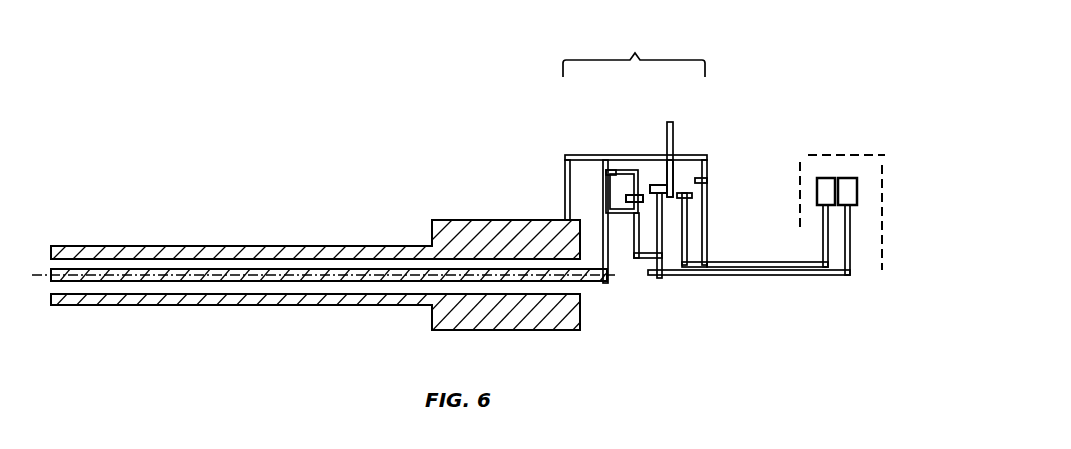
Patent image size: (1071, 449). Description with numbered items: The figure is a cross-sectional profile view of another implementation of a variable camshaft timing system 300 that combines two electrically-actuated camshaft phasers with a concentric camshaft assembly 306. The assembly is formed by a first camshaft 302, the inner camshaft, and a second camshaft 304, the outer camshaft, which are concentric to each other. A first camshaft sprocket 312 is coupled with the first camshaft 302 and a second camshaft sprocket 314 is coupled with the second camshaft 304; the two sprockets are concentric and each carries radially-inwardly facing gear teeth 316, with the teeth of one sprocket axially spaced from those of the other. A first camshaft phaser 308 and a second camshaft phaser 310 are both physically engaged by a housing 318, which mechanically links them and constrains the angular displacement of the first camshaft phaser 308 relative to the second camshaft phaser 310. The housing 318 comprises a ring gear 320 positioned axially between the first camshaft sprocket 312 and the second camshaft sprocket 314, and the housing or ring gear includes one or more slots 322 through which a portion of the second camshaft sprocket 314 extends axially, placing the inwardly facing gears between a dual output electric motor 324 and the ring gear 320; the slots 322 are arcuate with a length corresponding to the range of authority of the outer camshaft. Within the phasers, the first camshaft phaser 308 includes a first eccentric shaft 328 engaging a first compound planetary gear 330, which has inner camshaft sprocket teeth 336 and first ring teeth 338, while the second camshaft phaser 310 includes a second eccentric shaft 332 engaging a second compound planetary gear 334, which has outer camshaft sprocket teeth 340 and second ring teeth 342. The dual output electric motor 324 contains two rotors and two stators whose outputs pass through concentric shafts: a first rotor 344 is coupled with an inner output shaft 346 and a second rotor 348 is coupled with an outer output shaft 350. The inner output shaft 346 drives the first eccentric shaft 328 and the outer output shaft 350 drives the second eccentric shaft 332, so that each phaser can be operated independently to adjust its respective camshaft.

The variable camshaft timing system 300 is at (829, 62).
The first camshaft 302 is at (50, 274).
The second camshaft 304 is at (138, 246).
The concentric camshaft assembly 306 is at (64, 307).
The first camshaft phaser 308 is at (622, 262).
The second camshaft phaser 310 is at (708, 195).
The first camshaft sprocket 312 is at (651, 185).
The second camshaft sprocket 314 is at (690, 193).
The radially-inwardly facing gear teeth 316 is at (614, 171).
The housing 318 is at (634, 50).
The ring gear 320 is at (692, 152).
The slots 322 is at (678, 155).
The dual output electric motor 324 is at (895, 200).
The first eccentric shaft 328 is at (643, 272).
The first compound planetary gear 330 is at (630, 238).
The second eccentric shaft 332 is at (706, 262).
The second compound planetary gear 334 is at (705, 252).
The inner camshaft sprocket teeth 336 is at (622, 204).
The first ring teeth 338 is at (628, 226).
The outer camshaft sprocket teeth 340 is at (690, 195).
The second ring teeth 342 is at (677, 268).
The first rotor 344 is at (848, 178).
The inner output shaft 346 is at (818, 278).
The second rotor 348 is at (828, 178).
The outer output shaft 350 is at (790, 268).